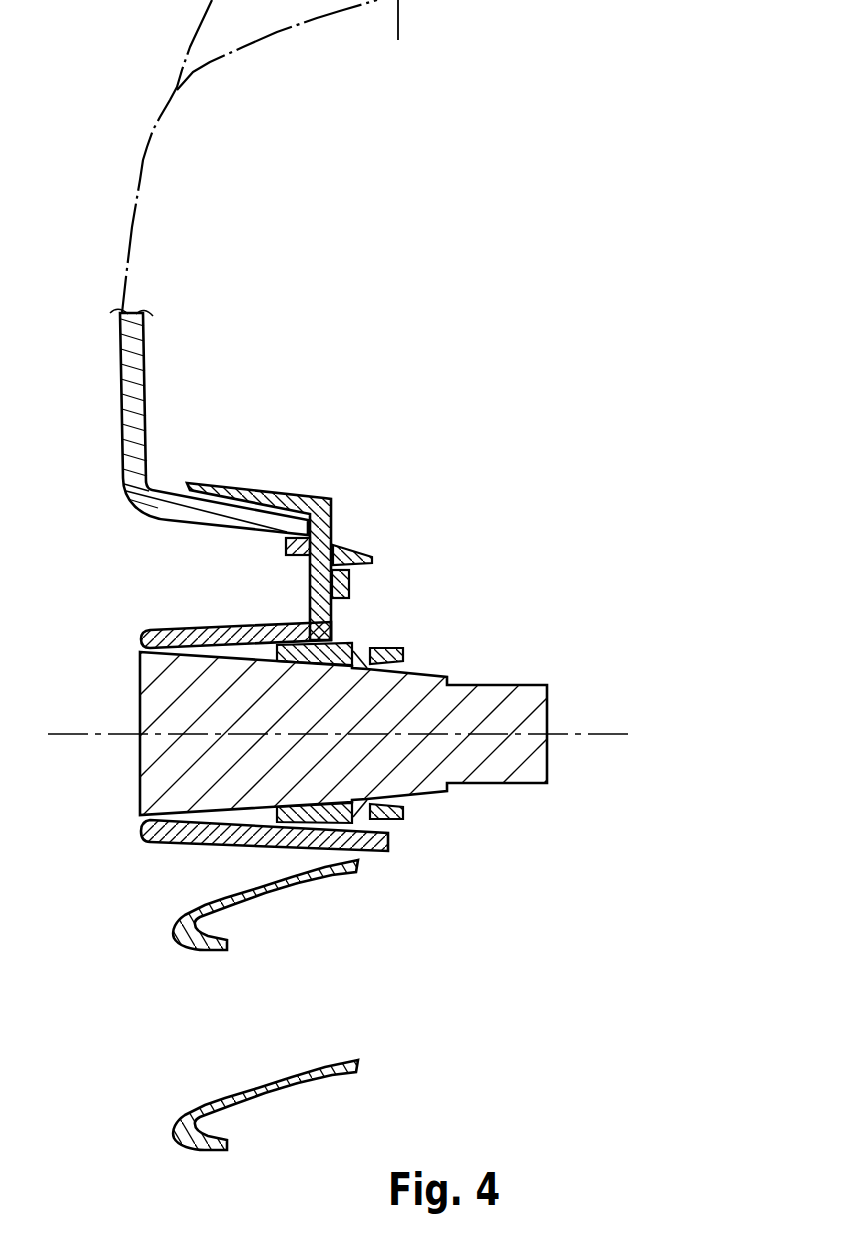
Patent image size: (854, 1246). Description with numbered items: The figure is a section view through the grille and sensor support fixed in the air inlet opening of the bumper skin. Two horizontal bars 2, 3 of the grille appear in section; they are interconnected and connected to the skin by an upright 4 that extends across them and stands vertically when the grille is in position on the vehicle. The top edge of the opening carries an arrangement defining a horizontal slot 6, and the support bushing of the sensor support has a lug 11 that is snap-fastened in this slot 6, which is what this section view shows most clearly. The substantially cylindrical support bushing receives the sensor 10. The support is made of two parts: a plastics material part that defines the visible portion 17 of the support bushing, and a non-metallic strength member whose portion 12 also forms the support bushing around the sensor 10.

The bar 2 is at (228, 1093).
The bar 3 is at (225, 895).
The upright 4 is at (128, 397).
The horizontal slot 6 is at (349, 584).
The sensor 10 is at (172, 697).
The lug 11 is at (350, 557).
The portion forming the support bushing 12 is at (382, 647).
The visible portion of the support bushing 17 is at (220, 630).